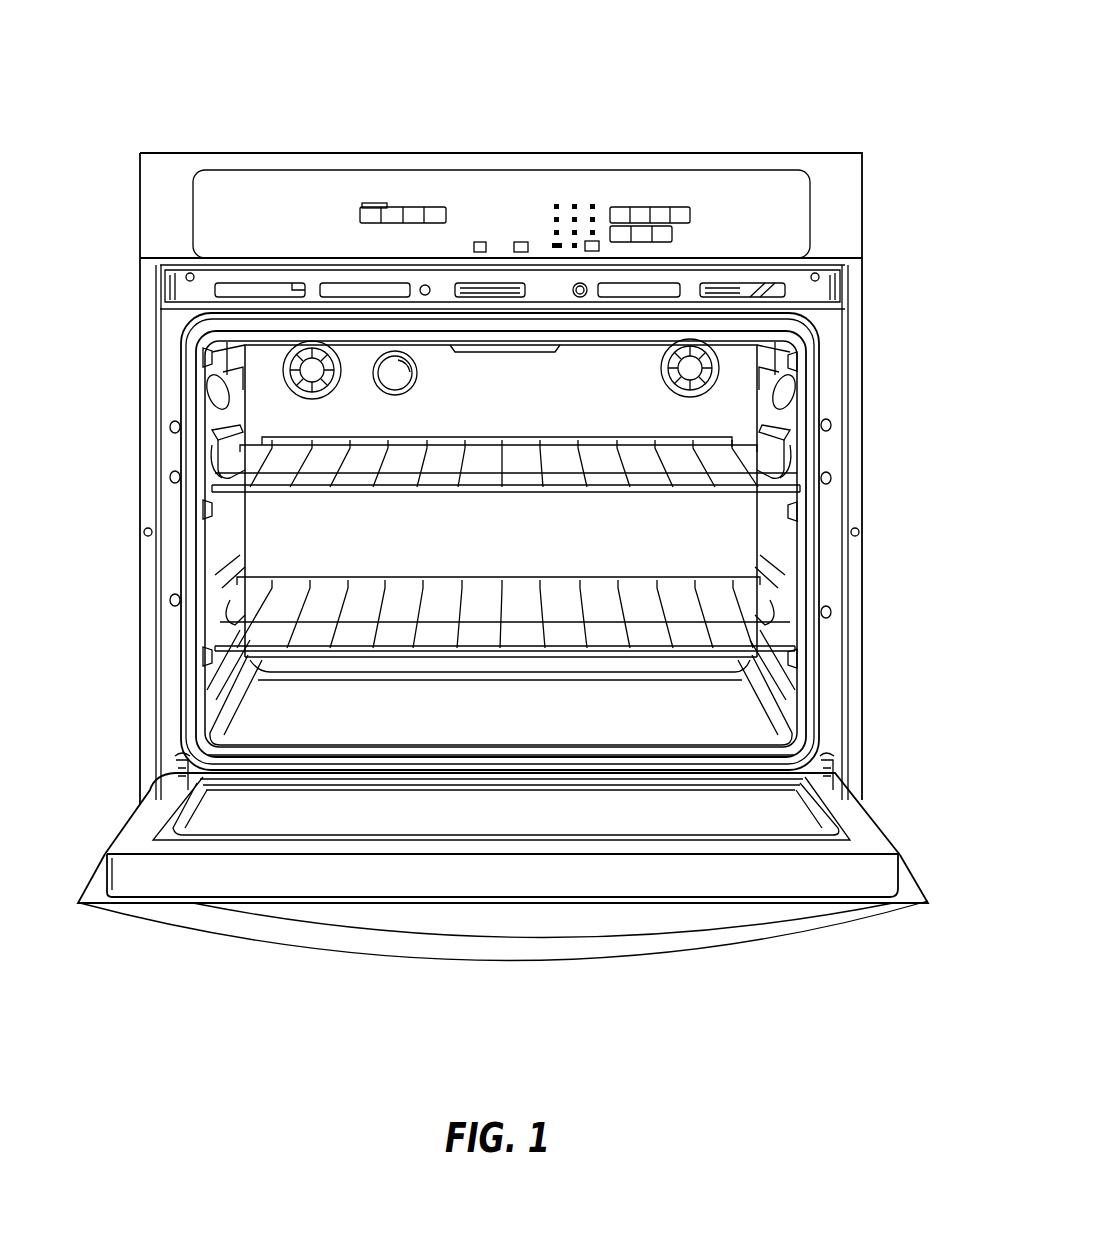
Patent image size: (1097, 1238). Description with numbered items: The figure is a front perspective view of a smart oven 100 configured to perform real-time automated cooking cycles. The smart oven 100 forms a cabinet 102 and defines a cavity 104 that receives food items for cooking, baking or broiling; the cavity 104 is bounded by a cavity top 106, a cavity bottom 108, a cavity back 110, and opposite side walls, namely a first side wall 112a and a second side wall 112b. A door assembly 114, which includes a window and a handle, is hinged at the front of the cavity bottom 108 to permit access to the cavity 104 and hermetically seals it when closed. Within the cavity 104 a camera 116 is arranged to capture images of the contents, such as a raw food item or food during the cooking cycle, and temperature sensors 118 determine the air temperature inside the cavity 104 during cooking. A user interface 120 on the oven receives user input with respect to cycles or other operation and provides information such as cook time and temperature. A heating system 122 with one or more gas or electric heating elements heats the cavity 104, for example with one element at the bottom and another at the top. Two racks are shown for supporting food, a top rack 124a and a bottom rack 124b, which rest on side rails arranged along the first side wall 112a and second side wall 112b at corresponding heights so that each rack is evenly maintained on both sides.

The smart oven 100 is at (462, 411).
The cabinet 102 is at (163, 412).
The cavity 104 is at (517, 415).
The cavity top 106 is at (595, 308).
The cavity bottom 108 is at (585, 718).
The cavity back 110 is at (603, 388).
The first side wall 112a is at (812, 398).
The second side wall 112b is at (182, 384).
The door assembly 114 is at (870, 863).
The camera 116 is at (383, 352).
The temperature sensors 118 is at (203, 355).
The user interface 120 is at (587, 190).
The heating system 122 is at (501, 705).
The top rack 124a is at (790, 483).
The bottom rack 124b is at (765, 620).